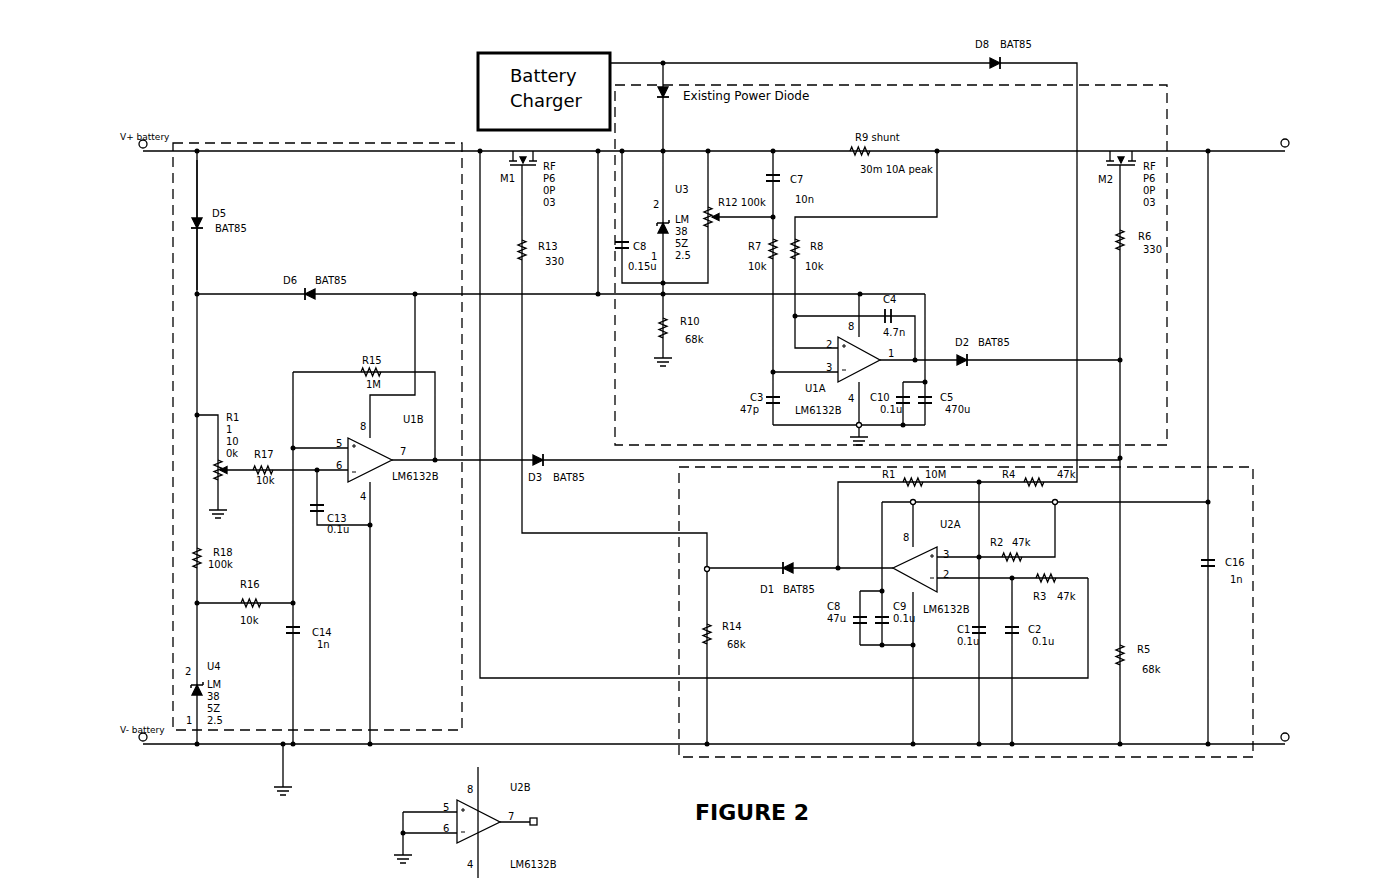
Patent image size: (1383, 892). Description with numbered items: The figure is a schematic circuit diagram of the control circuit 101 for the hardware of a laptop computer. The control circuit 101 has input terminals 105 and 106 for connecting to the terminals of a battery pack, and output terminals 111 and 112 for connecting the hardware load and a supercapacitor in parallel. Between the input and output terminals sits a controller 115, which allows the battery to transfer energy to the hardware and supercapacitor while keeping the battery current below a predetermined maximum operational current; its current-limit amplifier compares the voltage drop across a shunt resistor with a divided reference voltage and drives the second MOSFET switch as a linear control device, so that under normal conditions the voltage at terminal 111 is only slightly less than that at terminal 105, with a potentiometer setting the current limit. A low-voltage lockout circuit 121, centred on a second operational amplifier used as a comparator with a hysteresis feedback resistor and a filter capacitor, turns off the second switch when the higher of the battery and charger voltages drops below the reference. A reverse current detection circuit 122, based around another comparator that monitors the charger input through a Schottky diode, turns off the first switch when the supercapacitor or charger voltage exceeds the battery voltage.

The control circuit 101 is at (326, 109).
The input terminal 105 is at (168, 150).
The input terminal 106 is at (160, 748).
The output terminal 111 is at (1252, 149).
The output terminal 112 is at (1267, 743).
The controller 115 is at (1114, 85).
The low-voltage lockout circuit 121 is at (172, 318).
The reverse current detection circuit 122 is at (679, 633).